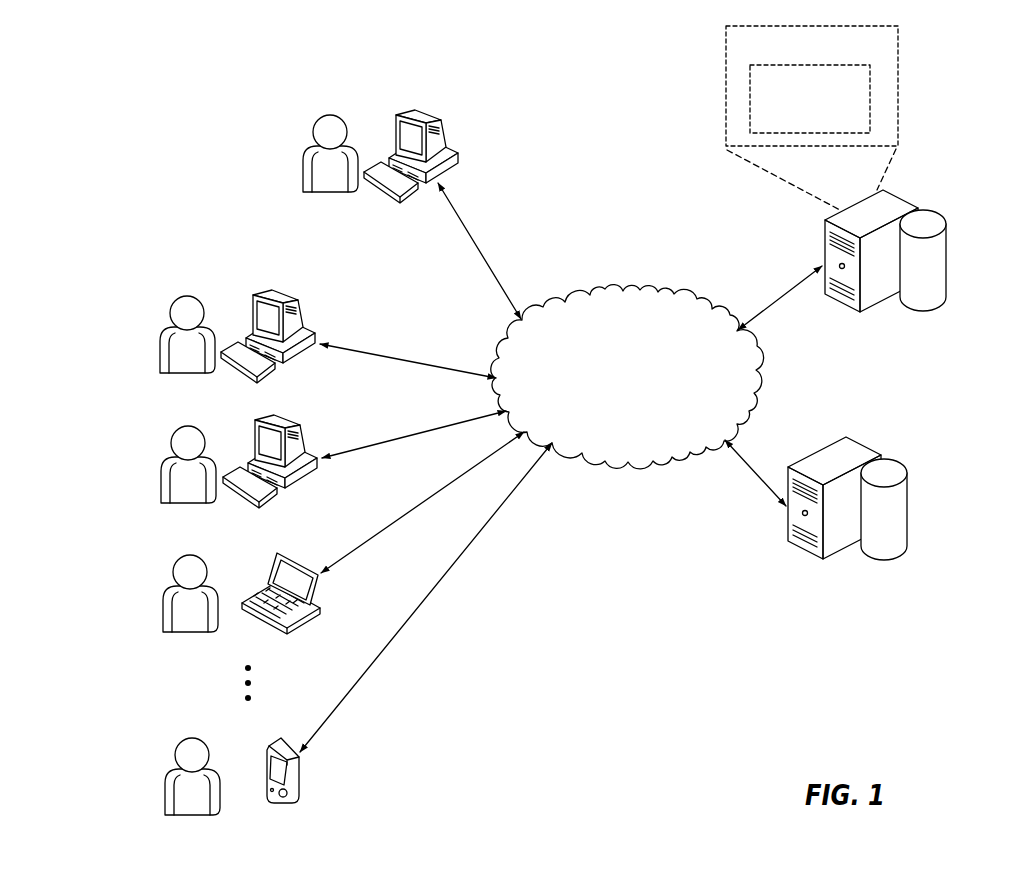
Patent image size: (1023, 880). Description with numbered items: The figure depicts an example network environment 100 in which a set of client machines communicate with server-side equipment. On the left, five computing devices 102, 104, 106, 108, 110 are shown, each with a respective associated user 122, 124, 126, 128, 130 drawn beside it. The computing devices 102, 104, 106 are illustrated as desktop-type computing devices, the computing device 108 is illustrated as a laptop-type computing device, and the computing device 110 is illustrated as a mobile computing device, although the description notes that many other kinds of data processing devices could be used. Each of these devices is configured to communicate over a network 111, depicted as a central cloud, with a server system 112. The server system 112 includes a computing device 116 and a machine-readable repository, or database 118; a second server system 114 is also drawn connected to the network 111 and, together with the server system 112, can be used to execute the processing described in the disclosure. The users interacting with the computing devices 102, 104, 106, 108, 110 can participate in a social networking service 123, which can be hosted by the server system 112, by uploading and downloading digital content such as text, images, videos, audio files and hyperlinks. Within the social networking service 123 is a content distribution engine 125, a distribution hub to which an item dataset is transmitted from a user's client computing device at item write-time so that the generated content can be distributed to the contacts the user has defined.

The network environment 100 is at (611, 151).
The computing device 102 is at (430, 124).
The computing device 104 is at (291, 294).
The computing device 106 is at (293, 422).
The computing device 108 is at (292, 558).
The computing device 110 is at (282, 742).
The network 111 is at (611, 290).
The server system 112 is at (829, 320).
The server system 114 is at (791, 570).
The computing device 116 is at (881, 393).
The database 118 is at (881, 403).
The user 122 is at (322, 117).
The social networking service 123 is at (837, 86).
The user 124 is at (180, 300).
The content distribution engine 125 is at (870, 98).
The user 126 is at (179, 428).
The user 128 is at (181, 561).
The user 130 is at (185, 742).